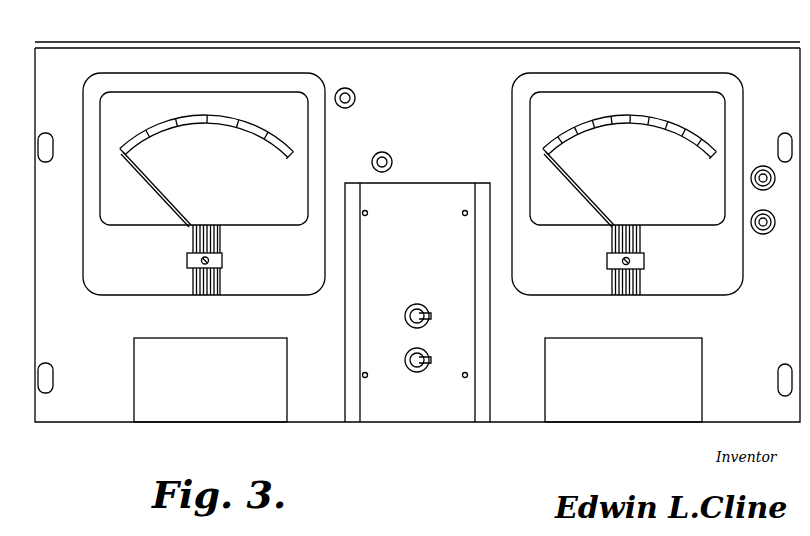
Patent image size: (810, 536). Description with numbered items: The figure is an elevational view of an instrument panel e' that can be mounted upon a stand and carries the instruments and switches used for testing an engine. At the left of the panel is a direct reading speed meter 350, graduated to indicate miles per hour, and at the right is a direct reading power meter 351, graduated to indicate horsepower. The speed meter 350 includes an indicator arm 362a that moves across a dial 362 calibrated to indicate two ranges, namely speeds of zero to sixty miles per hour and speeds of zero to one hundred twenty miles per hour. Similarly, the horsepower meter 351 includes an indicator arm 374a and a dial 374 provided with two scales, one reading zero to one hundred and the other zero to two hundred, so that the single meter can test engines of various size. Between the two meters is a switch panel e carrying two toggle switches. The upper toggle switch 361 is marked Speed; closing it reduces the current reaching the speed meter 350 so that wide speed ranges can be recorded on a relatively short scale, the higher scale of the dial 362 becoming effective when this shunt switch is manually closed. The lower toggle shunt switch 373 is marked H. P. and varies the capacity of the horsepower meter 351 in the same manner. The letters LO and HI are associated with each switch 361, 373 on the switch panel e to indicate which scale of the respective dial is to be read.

The speed meter 350 is at (325, 143).
The power meter 351 is at (728, 286).
The dial 362 is at (150, 108).
The indicator arm 362a is at (175, 210).
The dial 374 is at (715, 112).
The indicator arm 374a is at (598, 212).
The toggle switch 361 is at (405, 317).
The toggle shunt switch 373 is at (429, 361).
The switch panel e is at (417, 289).
The instrument panel e' is at (417, 28).